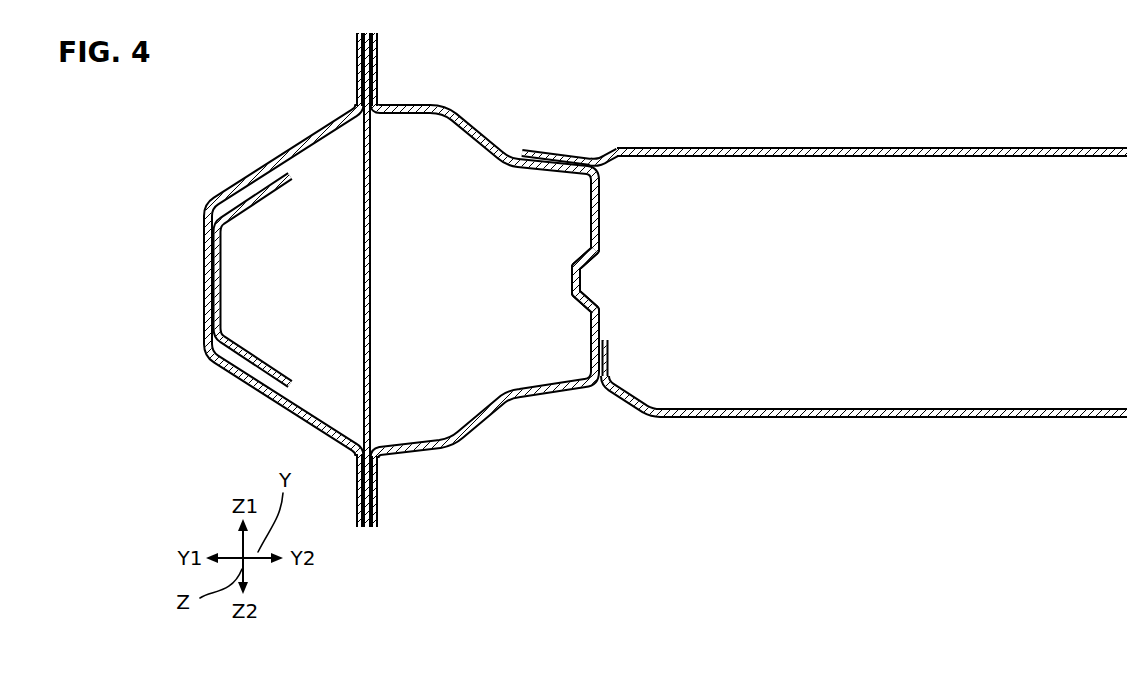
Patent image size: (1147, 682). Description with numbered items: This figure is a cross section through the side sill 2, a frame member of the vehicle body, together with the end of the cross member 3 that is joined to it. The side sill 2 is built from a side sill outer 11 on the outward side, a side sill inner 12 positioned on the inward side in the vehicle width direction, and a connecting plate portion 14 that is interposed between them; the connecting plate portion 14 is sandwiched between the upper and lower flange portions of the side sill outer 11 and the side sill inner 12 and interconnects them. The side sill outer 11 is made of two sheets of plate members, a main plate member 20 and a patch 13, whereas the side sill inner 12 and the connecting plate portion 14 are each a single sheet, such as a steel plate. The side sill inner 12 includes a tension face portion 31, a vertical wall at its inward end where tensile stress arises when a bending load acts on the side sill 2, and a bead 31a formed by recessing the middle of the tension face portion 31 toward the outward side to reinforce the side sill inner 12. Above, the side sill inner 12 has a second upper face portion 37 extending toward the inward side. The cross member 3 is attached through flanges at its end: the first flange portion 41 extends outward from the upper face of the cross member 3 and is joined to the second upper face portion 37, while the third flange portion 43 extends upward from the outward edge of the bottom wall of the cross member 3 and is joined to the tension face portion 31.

The side sill 2 is at (441, 268).
The cross member 3 is at (1012, 124).
The side sill outer 11 is at (304, 118).
The side sill inner 12 is at (482, 128).
The patch 13 is at (222, 281).
The connecting plate portion 14 is at (378, 188).
The main plate member 20 is at (340, 112).
The tension face portion 31 is at (603, 202).
The bead 31a is at (602, 278).
The second upper face portion 37 is at (549, 168).
The first flange portion 41 is at (562, 153).
The third flange portion 43 is at (610, 354).